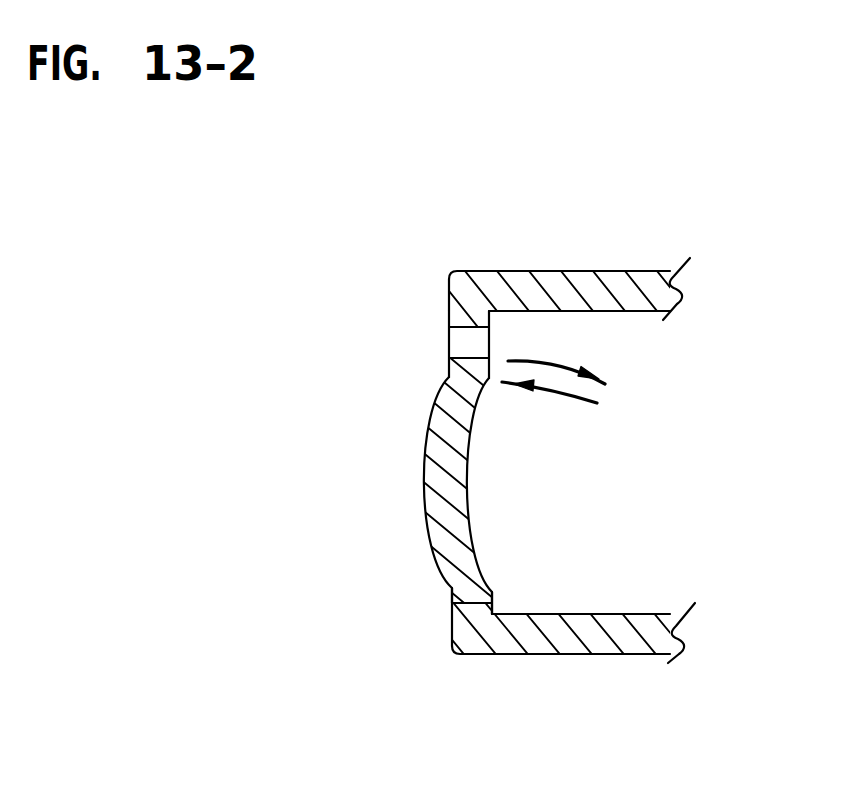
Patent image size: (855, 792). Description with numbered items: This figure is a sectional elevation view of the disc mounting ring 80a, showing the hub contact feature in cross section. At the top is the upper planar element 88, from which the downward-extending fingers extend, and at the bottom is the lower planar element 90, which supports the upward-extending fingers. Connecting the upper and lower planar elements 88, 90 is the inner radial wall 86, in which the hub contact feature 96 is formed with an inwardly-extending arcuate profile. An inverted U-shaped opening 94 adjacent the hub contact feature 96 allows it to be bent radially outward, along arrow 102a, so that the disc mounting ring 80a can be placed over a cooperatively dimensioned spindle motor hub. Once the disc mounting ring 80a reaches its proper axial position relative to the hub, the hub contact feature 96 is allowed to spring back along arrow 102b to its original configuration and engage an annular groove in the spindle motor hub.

The disc mounting ring 80a is at (302, 320).
The inner radial wall 86 is at (453, 623).
The upper planar element 88 is at (589, 284).
The lower planar element 90 is at (597, 638).
The inverted U-shaped opening 94 is at (460, 340).
The hub contact feature 96 is at (421, 487).
The arrow 102a is at (558, 363).
The arrow 102b is at (557, 390).